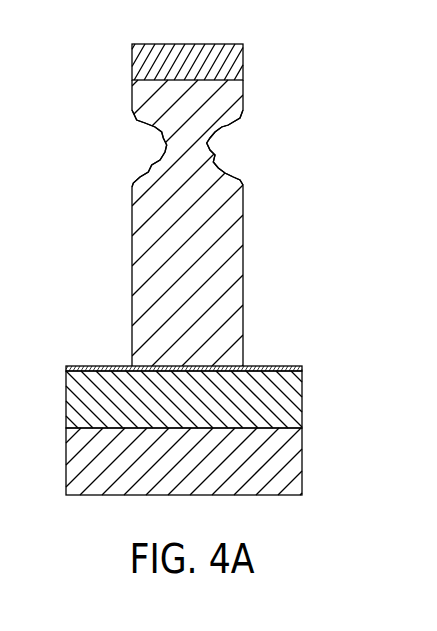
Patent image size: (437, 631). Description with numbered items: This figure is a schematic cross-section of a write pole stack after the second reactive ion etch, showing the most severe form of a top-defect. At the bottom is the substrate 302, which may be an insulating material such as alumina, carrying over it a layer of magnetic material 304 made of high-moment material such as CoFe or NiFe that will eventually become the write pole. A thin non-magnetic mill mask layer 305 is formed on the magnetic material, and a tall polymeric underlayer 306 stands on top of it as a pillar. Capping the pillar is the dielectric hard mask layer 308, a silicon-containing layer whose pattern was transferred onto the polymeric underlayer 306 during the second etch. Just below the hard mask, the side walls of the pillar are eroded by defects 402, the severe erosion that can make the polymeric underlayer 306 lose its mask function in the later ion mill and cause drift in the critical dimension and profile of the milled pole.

The substrate 302 is at (163, 472).
The layer of magnetic material 304 is at (163, 405).
The non-magnetic mill mask layer 305 is at (300, 368).
The polymeric underlayer 306 is at (163, 219).
The dielectric hard mask layer 308 is at (165, 69).
The defects 402 is at (145, 147).